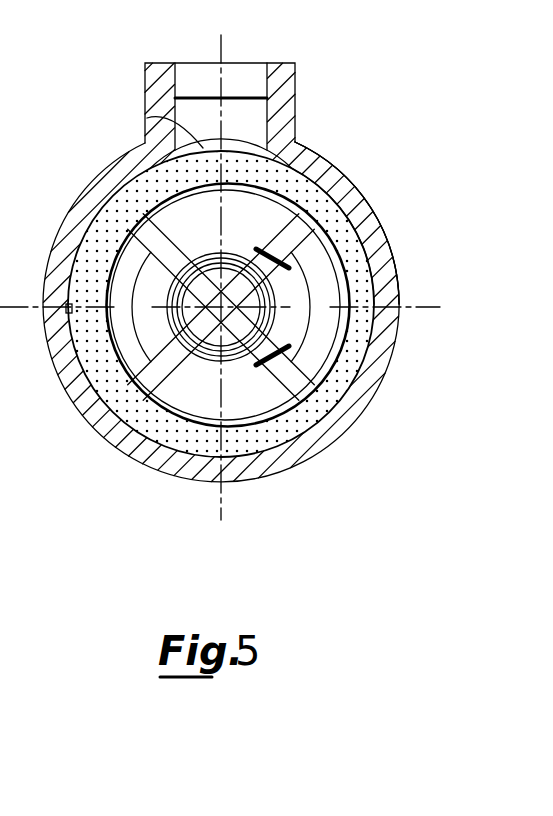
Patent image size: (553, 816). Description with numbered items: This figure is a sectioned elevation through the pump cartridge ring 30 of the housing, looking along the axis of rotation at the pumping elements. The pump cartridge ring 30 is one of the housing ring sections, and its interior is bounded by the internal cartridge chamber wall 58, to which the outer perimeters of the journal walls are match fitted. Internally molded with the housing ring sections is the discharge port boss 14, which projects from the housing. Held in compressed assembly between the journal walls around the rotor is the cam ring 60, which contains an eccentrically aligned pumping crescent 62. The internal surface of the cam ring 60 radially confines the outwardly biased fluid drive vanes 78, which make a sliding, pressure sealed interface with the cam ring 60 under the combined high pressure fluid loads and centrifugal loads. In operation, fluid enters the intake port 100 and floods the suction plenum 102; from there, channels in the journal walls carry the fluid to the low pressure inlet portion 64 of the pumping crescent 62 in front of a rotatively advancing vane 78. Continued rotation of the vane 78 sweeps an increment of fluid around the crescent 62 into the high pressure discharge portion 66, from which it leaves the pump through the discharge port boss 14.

The discharge port boss 14 is at (145, 76).
The pump cartridge ring 30 is at (318, 440).
The internal cartridge chamber wall 58 is at (366, 362).
The cam ring 60 is at (376, 216).
The pumping crescent 62 is at (350, 283).
The inlet portion 64 is at (328, 172).
The discharge portion 66 is at (274, 432).
The fluid drive vanes 78 is at (221, 307).
The intake port 100 is at (237, 67).
The suction plenum 102 is at (147, 118).